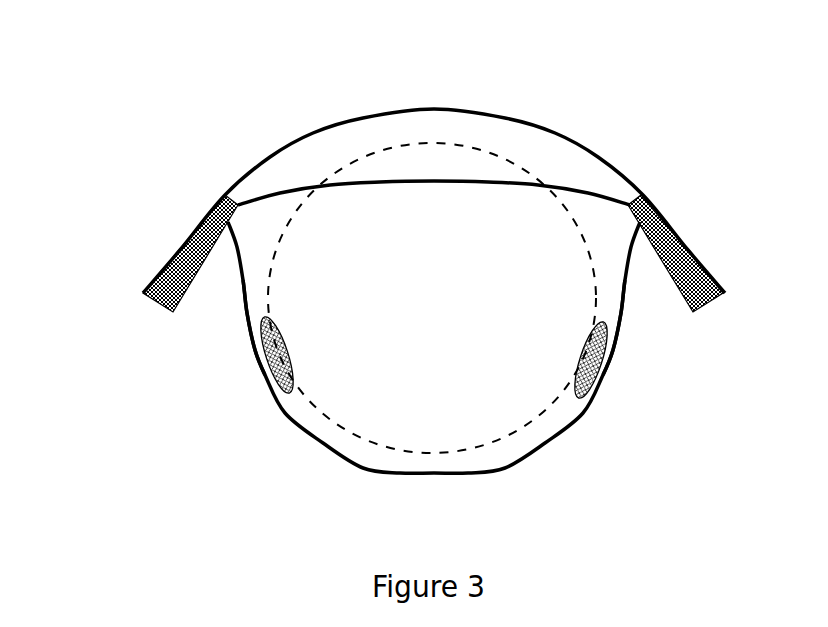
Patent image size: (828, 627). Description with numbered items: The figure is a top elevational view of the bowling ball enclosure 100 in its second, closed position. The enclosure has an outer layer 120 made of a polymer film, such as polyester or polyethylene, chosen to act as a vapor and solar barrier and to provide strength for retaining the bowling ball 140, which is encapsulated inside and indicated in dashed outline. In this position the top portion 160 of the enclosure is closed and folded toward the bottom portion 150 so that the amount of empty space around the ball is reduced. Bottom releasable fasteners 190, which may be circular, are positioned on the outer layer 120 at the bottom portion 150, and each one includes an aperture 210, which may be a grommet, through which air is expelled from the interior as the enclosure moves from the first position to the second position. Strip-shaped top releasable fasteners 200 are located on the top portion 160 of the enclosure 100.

The bowling ball enclosure 100 is at (428, 77).
The outer layer 120 is at (352, 463).
The bowling ball 140 is at (350, 170).
The bottom portion 150 is at (518, 473).
The top portion 160 is at (479, 180).
The bottom releasable fasteners 190 is at (257, 342).
The top releasable fasteners 200 is at (145, 295).
The aperture 210 is at (265, 373).